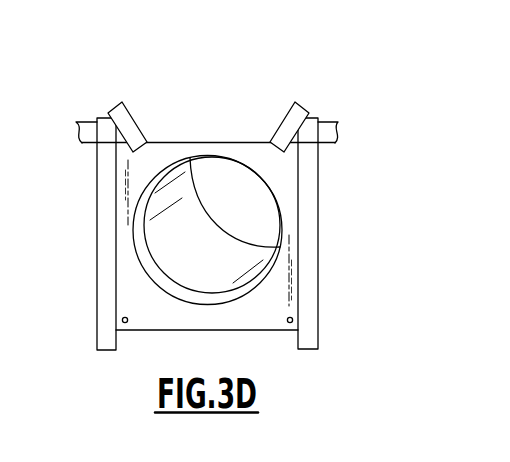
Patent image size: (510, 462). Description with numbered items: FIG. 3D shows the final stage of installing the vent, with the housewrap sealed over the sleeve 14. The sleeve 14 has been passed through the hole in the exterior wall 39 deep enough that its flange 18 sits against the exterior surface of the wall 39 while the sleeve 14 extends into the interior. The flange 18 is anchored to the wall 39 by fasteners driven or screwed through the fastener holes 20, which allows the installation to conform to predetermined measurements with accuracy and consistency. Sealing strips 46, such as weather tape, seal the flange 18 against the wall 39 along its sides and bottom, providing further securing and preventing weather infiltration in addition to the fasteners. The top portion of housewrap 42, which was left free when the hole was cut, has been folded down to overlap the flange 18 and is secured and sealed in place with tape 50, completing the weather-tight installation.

The sleeve 14 is at (165, 233).
The flange 18 is at (125, 292).
The fastener holes 20 is at (122, 320).
The wall 39 is at (359, 317).
The top portion of housewrap 42 is at (232, 140).
The sealing strips 46 is at (77, 130).
The tape 50 is at (127, 119).